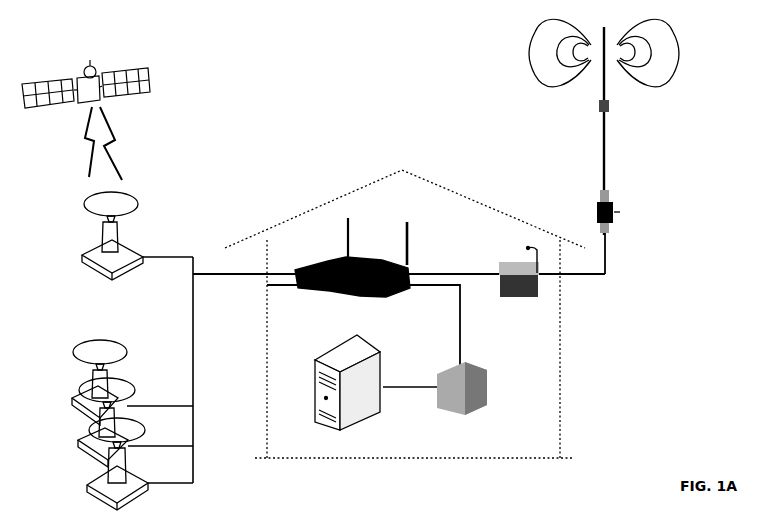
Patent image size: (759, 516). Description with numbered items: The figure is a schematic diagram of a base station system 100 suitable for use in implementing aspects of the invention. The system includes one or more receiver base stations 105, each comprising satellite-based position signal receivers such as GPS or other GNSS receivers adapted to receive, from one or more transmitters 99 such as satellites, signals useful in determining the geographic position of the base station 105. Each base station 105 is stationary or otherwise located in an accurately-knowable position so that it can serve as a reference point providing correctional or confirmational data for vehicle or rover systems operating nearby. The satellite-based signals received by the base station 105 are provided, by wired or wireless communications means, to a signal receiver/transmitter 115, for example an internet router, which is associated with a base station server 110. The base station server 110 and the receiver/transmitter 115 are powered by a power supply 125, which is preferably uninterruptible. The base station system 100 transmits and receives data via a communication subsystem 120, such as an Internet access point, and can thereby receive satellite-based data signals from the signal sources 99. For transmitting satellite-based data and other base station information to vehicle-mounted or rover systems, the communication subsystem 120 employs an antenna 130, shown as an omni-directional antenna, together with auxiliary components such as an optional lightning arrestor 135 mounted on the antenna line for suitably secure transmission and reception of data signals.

The base station system 100 is at (484, 46).
The transmitter 99 is at (66, 137).
The receiver base station 105 is at (180, 232).
The base station server 110 is at (436, 455).
The signal receiver/transmitter 115 is at (434, 322).
The communication subsystem 120 is at (597, 327).
The power supply 125 is at (536, 455).
The antenna 130 is at (719, 133).
The lightning arrestor 135 is at (719, 247).